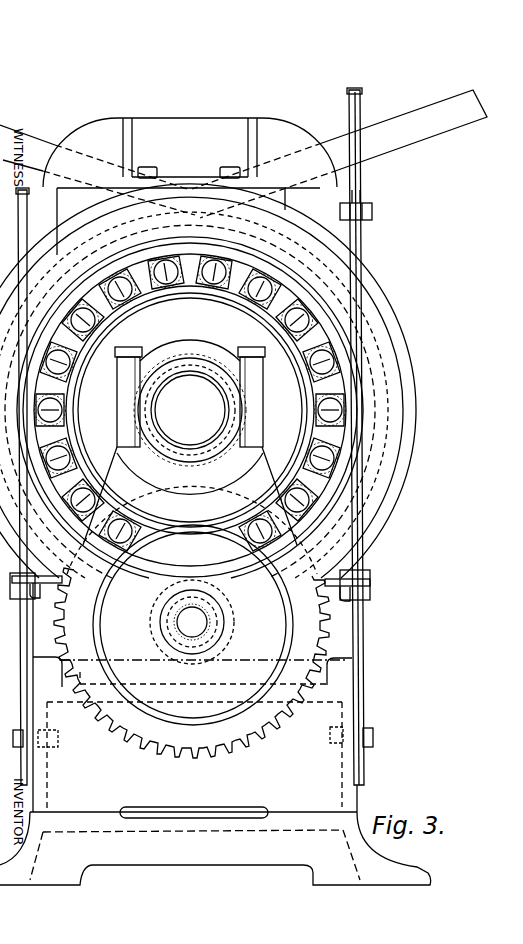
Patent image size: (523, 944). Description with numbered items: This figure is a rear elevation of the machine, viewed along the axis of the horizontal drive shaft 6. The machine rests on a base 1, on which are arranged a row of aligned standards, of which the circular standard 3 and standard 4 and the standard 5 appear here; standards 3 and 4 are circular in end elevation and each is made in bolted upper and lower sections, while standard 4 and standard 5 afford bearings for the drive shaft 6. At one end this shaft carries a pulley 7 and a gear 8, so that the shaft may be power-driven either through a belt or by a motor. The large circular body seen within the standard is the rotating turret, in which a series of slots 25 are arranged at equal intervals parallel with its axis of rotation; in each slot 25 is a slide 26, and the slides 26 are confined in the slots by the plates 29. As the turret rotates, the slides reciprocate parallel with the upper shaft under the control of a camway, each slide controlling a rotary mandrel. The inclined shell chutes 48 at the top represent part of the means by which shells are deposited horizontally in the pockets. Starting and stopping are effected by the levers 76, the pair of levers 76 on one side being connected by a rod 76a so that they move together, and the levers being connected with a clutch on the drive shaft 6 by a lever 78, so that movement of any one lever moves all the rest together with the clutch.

The base 1 is at (360, 768).
The standard 3 is at (20, 578).
The standard 4 is at (405, 412).
The standard 5 is at (283, 447).
The drive shaft 6 is at (203, 640).
The pulley 7 is at (168, 712).
The gear 8 is at (182, 750).
The slots 25 is at (88, 342).
The slide 26 is at (270, 318).
The plates 29 is at (217, 299).
The shell chutes 48 is at (405, 142).
The levers 76 is at (361, 241).
The rod 76a is at (366, 208).
The lever 78 is at (358, 585).